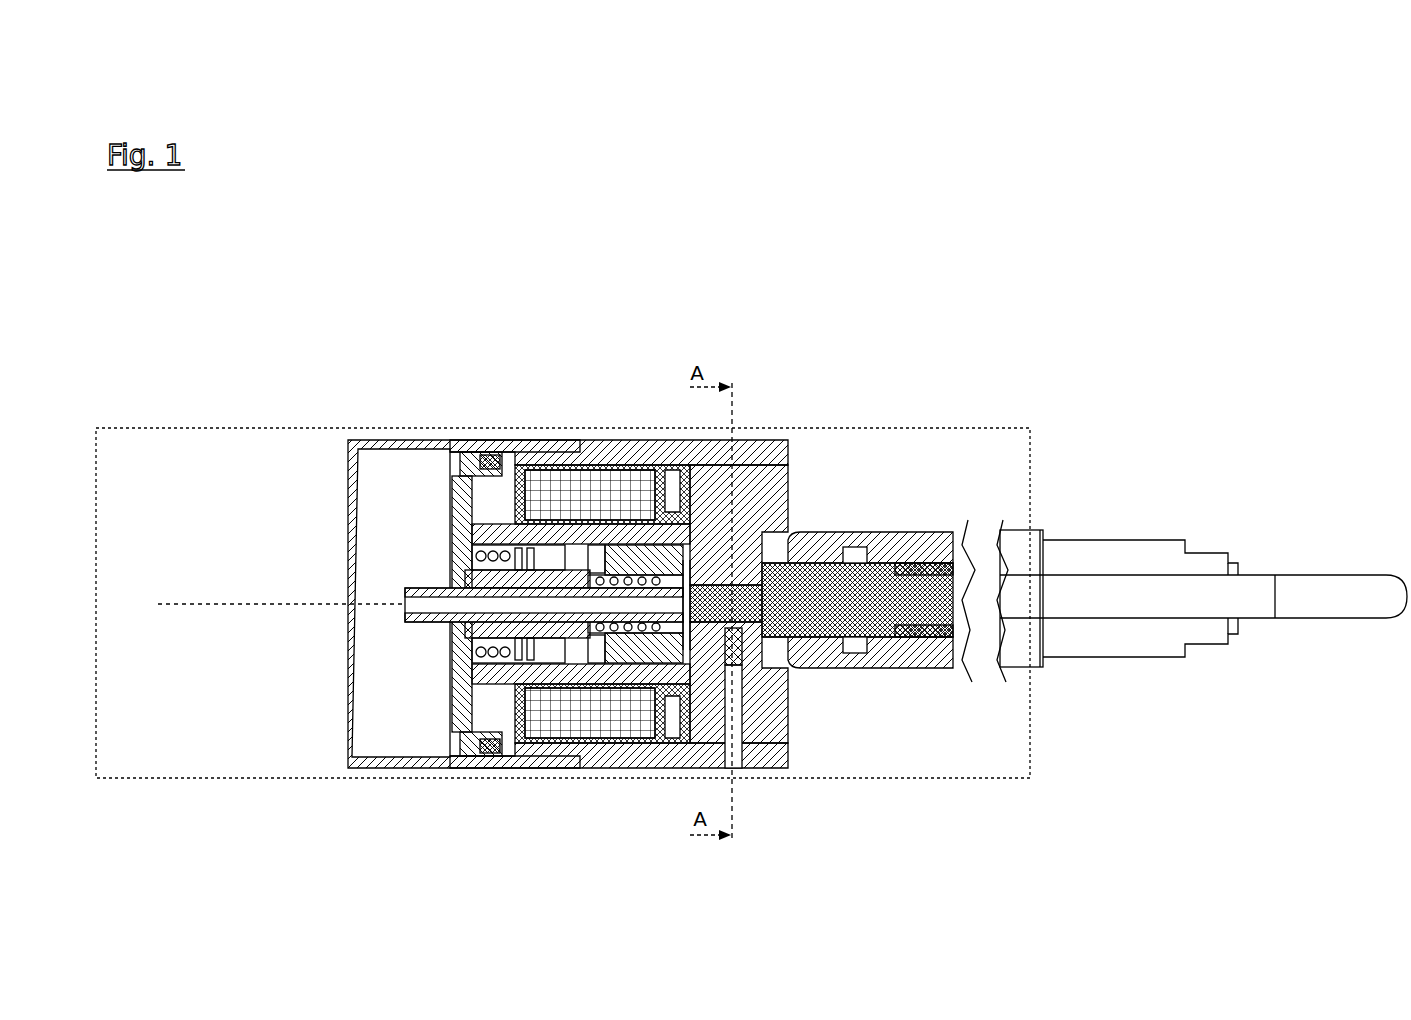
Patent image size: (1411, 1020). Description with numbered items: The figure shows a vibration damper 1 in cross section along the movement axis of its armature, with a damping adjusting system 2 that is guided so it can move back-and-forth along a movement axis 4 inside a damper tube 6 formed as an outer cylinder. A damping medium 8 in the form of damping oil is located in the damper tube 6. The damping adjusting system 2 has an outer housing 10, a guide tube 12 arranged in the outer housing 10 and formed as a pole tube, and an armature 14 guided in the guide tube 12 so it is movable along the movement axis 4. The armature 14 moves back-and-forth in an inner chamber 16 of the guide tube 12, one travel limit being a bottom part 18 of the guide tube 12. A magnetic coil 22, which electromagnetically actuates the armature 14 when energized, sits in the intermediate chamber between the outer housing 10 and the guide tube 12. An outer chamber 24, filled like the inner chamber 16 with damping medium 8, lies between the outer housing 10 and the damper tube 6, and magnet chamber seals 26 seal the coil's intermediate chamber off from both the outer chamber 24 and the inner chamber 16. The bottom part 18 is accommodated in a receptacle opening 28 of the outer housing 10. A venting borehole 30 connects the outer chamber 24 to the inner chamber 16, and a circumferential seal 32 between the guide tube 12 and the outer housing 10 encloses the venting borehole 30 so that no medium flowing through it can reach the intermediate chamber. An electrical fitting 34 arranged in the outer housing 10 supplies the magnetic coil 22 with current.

The vibration damper 1 is at (1160, 238).
The damping adjusting system 2 is at (901, 525).
The movement axis 4 is at (234, 600).
The damper tube 6 is at (122, 428).
The damping medium 8 is at (160, 503).
The outer housing 10 is at (368, 445).
The guide tube 12 is at (572, 750).
The armature 14 is at (413, 627).
The inner chamber 16 is at (597, 560).
The bottom part 18 is at (748, 540).
The magnetic coil 22 is at (538, 485).
The outer chamber 24 is at (667, 438).
The magnet chamber seals 26 is at (493, 745).
The receptacle opening 28 is at (764, 526).
The venting borehole 30 is at (733, 728).
The circumferential seal 32 is at (752, 660).
The electrical fitting 34 is at (910, 640).